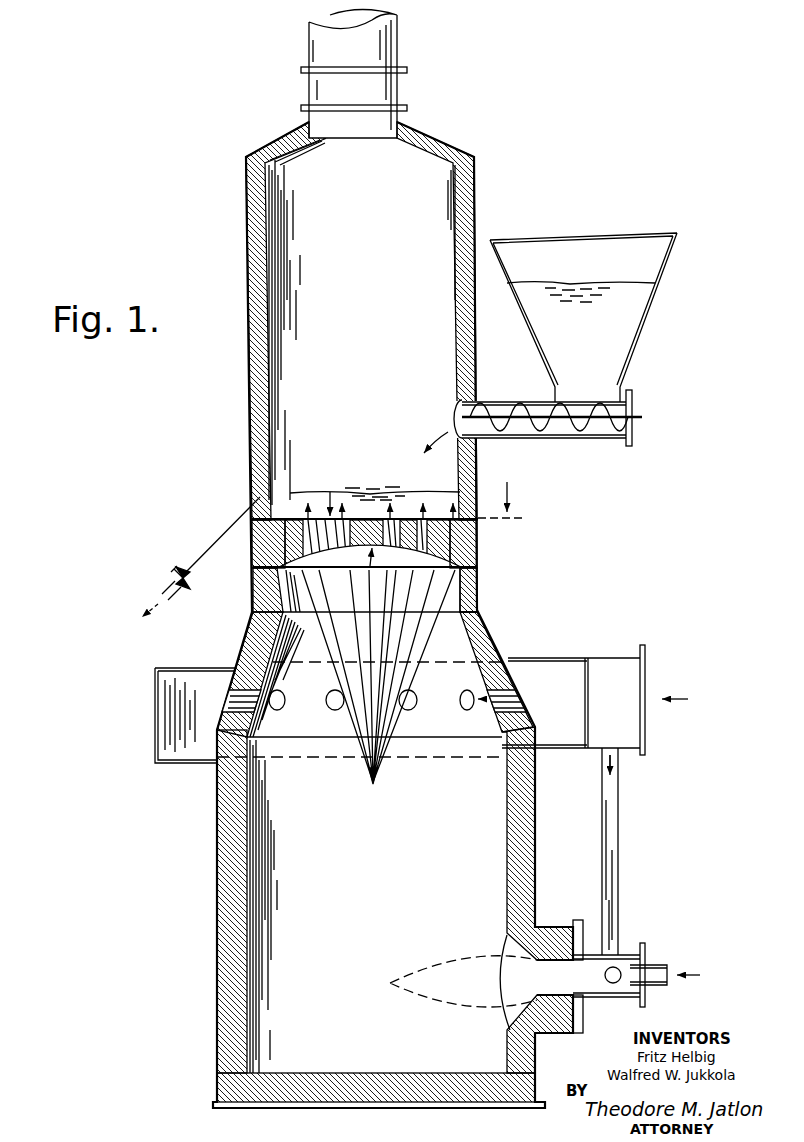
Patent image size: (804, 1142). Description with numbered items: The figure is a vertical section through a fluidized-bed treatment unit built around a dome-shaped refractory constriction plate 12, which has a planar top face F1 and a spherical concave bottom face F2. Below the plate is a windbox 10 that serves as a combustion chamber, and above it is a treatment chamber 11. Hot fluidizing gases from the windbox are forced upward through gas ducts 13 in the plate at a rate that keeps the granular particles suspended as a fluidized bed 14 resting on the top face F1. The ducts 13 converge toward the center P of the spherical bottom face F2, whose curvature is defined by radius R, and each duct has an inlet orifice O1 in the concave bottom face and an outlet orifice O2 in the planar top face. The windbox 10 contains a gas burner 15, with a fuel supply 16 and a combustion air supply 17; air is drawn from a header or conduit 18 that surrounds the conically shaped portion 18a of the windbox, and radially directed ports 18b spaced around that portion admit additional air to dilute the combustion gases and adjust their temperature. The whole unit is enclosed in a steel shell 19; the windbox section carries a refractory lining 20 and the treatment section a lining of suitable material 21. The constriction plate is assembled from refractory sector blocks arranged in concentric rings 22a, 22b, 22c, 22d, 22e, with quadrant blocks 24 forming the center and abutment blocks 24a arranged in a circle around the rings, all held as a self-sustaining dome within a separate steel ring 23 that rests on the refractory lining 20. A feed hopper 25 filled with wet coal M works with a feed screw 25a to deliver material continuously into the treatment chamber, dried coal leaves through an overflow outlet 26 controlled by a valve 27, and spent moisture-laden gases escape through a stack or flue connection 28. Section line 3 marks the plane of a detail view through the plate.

The windbox 10 is at (258, 893).
The treatment chamber 11 is at (285, 398).
The constriction plate 12 is at (372, 598).
The gas upflow ducts / refractory sector blocks 13 is at (300, 545).
The fluidized bed 14 is at (350, 502).
The gas burner 15 is at (553, 923).
The fuel pressure supply 16 is at (652, 964).
The combustion air pressure supply 17 is at (620, 876).
The air header or conduit 18 is at (156, 720).
The conically shaped portion of windbox 18a is at (481, 637).
The radially directed ports 18b is at (510, 700).
The steel shell 19 is at (250, 360).
The refractory lining of windbox 20 is at (249, 955).
The lining of treatment section 21 is at (268, 285).
The ring of sector blocks 22a is at (445, 516).
The ring of sector blocks 22b is at (425, 516).
The ring of sector blocks 22c is at (410, 516).
The ring of sector blocks 22d is at (390, 516).
The ring of sector blocks 22e is at (378, 516).
The steel ring 23 is at (478, 533).
The quadrant blocks 24 is at (372, 566).
The abutment blocks 24a is at (468, 548).
The feed hopper 25 is at (645, 320).
The feed screw 25a is at (585, 432).
The overflow outlet 26 is at (218, 548).
The valve 27 is at (190, 582).
The stack or flue connection 28 is at (378, 121).
The wet coal M is at (585, 282).
The center of spherical bottom face P is at (381, 783).
The radius of spherical dome surface R is at (322, 644).
The planar top face F1 is at (300, 500).
The spherical bottom face F2 is at (447, 570).
The inlet orifice O1 is at (312, 506).
The outlet orifice O2 is at (364, 512).
The section line 3- 3 is at (418, 486).